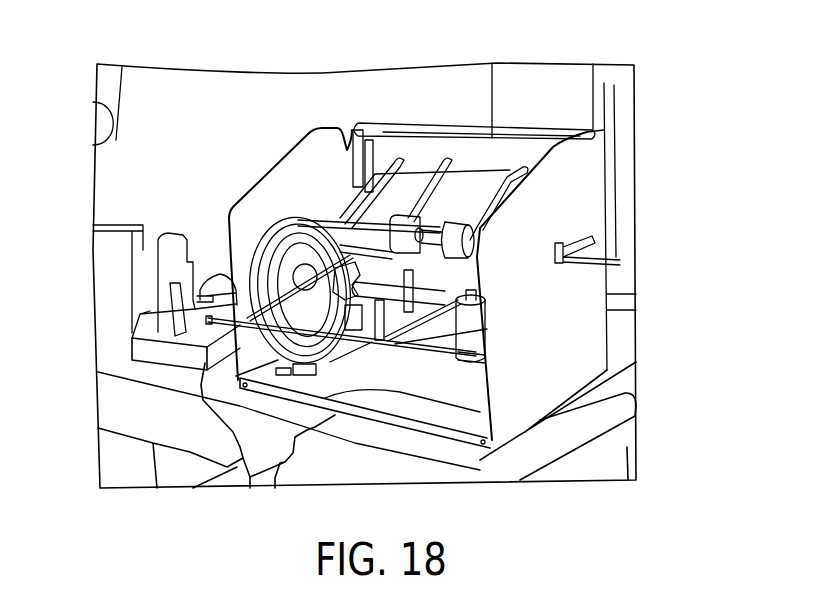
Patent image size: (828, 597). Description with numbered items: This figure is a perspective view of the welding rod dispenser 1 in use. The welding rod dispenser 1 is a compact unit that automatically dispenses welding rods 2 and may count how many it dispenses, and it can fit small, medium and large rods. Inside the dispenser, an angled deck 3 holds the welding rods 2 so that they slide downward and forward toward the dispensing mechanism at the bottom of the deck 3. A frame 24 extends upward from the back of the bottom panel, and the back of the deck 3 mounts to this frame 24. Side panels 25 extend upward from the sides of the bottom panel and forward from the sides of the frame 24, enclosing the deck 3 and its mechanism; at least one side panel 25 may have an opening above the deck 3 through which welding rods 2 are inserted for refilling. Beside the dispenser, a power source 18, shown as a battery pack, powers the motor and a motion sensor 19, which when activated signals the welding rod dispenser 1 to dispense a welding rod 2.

The welding rod dispenser 1 is at (163, 175).
The welding rod 2 is at (468, 384).
The deck 3 is at (477, 185).
The power source 18 is at (150, 328).
The motion sensor 19 is at (158, 249).
The frame 24 is at (415, 126).
The side panels 25 is at (297, 173).